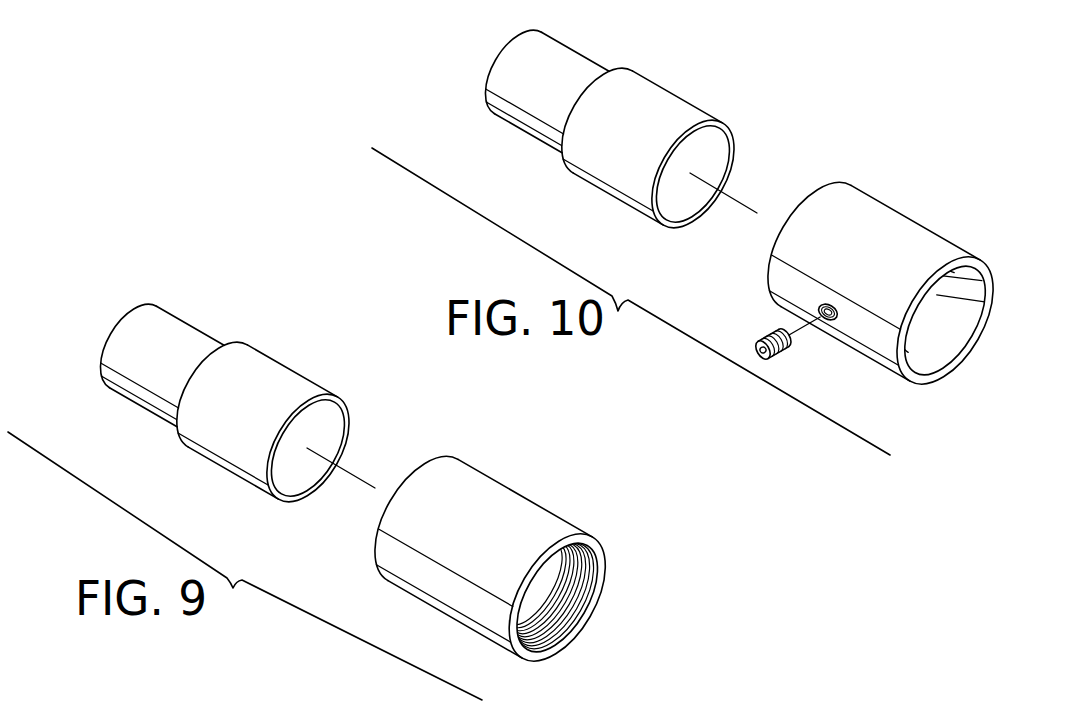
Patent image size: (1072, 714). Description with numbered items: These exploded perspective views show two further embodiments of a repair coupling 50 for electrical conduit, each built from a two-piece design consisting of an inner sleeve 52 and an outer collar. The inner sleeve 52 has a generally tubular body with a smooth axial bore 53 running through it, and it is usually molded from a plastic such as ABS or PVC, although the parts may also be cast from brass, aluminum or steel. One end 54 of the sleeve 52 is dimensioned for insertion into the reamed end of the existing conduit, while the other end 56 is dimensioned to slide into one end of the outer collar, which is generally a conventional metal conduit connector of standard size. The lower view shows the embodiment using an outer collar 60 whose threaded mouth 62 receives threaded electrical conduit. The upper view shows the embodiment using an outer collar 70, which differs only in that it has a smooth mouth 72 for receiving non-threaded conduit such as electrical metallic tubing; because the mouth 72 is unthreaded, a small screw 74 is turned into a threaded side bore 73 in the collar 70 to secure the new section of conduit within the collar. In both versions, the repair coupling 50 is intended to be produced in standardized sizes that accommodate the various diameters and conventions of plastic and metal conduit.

In FIG. 9, the repair coupling 50 is at (434, 412).
In FIG. 10, the repair coupling 50 is at (823, 133).
In FIG. 9, the inner sleeve 52 is at (298, 351).
In FIG. 10, the inner sleeve 52 is at (682, 76).
In FIG. 9, the smooth axial bore 53 is at (290, 407).
In FIG. 10, the smooth axial bore 53 is at (683, 145).
In FIG. 9, the one end of sleeve 54 is at (153, 413).
In FIG. 10, the one end of sleeve 54 is at (537, 133).
In FIG. 9, the other end of sleeve 56 is at (223, 447).
In FIG. 10, the other end of sleeve 56 is at (608, 172).
In FIG. 9, the outer collar 60 is at (566, 495).
In FIG. 9, the threaded mouth 62 is at (582, 603).
In FIG. 10, the outer collar 70 is at (950, 221).
In FIG. 10, the smooth mouth 72 is at (962, 325).
In FIG. 10, the threaded side bore 73 is at (828, 321).
In FIG. 10, the small screw 74 is at (761, 337).